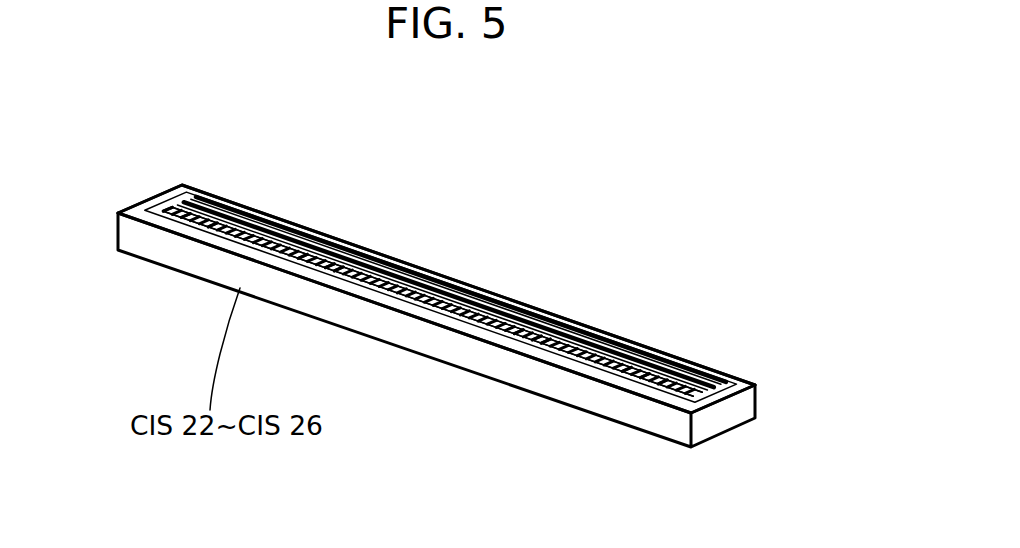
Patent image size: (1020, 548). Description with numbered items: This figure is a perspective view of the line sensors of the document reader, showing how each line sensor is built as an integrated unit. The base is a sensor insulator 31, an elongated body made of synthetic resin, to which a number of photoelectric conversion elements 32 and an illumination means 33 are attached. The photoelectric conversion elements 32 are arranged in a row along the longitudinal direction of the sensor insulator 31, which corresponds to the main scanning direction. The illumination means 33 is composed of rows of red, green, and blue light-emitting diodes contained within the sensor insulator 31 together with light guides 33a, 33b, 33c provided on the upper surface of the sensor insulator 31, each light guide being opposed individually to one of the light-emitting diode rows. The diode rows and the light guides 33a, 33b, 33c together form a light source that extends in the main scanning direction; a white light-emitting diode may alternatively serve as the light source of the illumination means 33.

The sensor insulator 31 is at (412, 345).
The photoelectric conversion elements 32 is at (665, 473).
The illumination means 33 is at (450, 278).
The light guide 33a is at (272, 217).
The light guide 33b is at (317, 235).
The light guide 33c is at (363, 250).